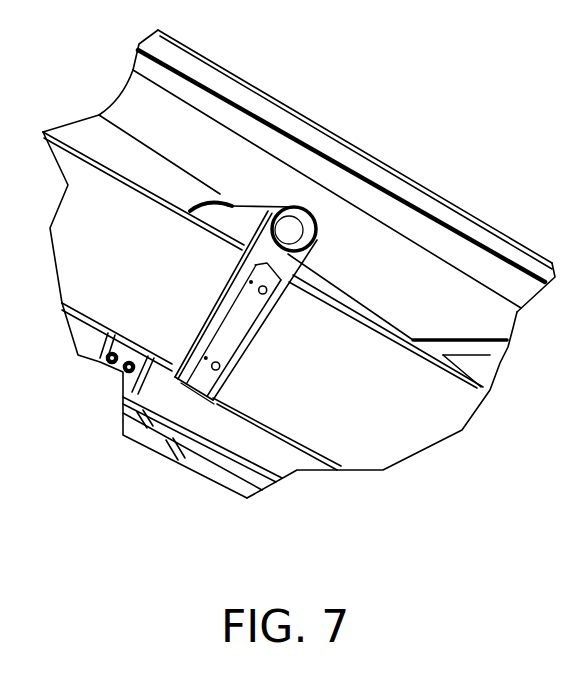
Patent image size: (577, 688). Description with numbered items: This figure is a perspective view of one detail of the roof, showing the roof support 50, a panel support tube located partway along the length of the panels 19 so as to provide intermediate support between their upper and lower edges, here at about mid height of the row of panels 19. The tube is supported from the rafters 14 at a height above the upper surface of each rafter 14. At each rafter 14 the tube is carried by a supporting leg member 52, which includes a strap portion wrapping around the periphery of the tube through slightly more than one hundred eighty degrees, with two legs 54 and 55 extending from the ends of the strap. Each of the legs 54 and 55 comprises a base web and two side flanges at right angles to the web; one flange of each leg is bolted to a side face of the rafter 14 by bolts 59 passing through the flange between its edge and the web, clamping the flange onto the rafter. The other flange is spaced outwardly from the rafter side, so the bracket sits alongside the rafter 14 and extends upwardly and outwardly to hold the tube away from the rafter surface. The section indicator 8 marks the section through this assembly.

The section line 8- 8 is at (343, 202).
The rafter 14 is at (370, 428).
The panels 19 is at (377, 220).
The roof support 50 is at (248, 182).
The supporting leg member 52 is at (293, 326).
The leg 54 is at (214, 298).
The leg 55 is at (233, 383).
The bolts 59 is at (229, 377).